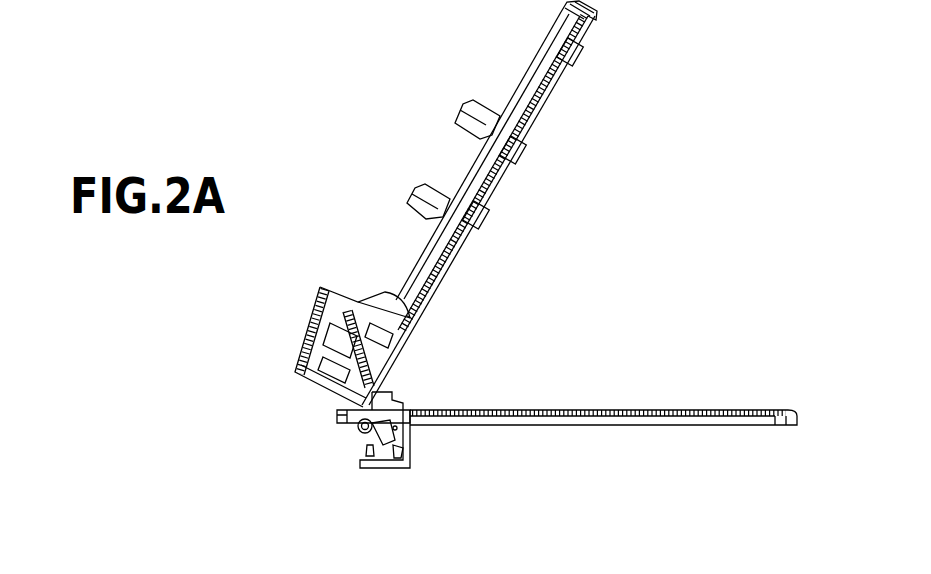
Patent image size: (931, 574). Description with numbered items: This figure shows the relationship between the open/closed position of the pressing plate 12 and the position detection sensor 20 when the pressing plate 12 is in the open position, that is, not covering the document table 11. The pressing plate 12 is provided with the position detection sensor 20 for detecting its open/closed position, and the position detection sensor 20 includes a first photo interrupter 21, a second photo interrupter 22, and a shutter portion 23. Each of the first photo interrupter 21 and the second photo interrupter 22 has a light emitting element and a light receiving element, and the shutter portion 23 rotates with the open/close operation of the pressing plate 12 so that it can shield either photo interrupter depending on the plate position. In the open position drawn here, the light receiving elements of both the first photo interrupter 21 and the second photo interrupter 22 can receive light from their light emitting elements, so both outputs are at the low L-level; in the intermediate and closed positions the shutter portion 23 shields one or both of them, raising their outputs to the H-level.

The document table 11 is at (690, 420).
The pressing plate 12 is at (525, 95).
The position detection sensor 20 is at (388, 562).
The first photo interrupter 21 is at (396, 463).
The second photo interrupter 22 is at (362, 452).
The shutter portion 23 is at (410, 430).